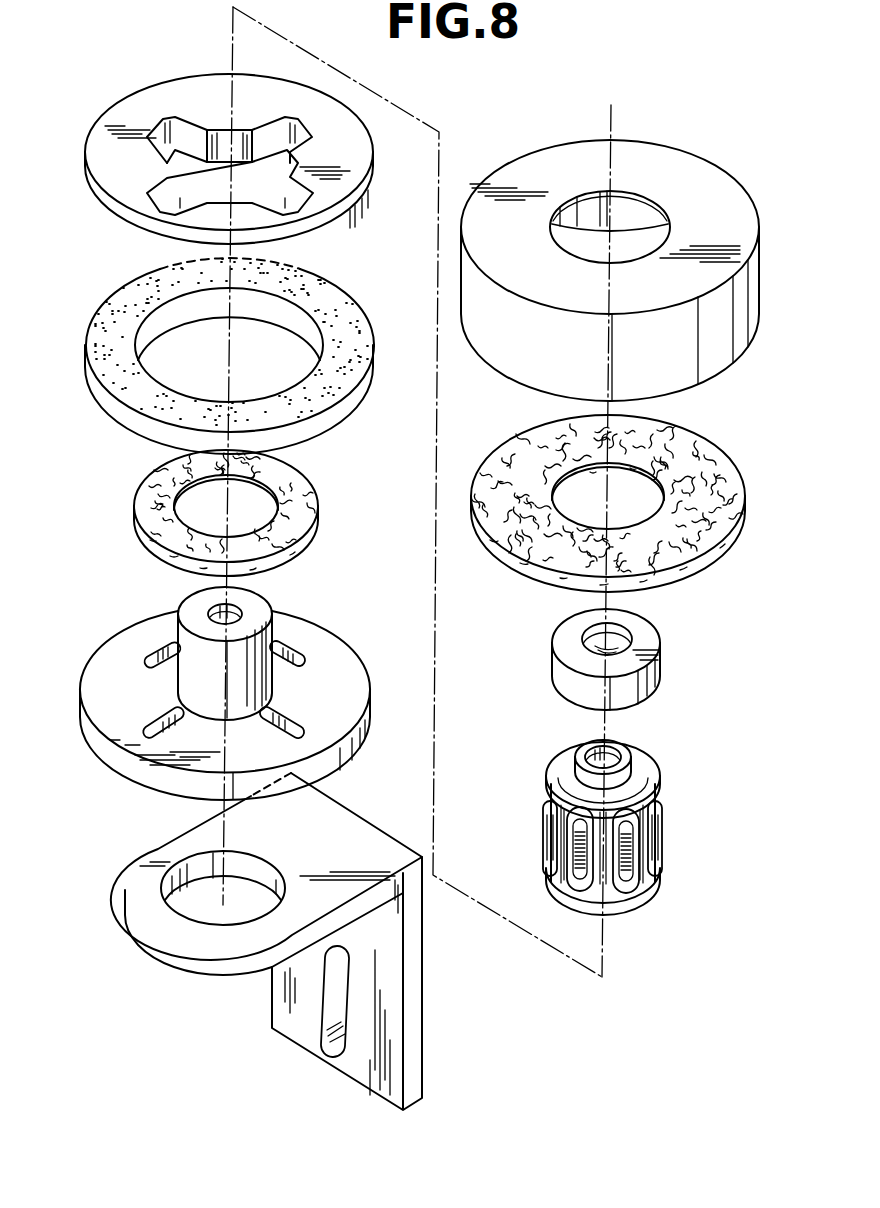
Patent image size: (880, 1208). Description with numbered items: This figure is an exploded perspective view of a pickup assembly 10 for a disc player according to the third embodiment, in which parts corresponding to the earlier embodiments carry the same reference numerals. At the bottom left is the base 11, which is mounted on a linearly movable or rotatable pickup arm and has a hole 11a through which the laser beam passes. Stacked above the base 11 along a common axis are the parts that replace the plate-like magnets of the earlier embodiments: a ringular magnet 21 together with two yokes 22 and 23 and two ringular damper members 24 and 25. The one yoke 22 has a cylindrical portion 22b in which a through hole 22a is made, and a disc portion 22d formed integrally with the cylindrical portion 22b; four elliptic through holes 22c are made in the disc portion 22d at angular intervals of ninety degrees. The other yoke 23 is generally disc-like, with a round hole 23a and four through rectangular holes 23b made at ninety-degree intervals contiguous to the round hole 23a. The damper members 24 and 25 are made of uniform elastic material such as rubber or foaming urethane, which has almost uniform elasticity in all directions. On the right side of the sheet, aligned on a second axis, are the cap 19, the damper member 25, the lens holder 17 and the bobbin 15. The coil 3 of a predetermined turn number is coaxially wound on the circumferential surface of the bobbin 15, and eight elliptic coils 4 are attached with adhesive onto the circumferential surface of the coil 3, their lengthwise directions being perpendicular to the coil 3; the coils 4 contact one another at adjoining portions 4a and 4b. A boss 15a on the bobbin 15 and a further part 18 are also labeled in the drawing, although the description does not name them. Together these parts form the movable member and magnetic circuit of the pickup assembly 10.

The coil 3 is at (623, 897).
The elliptic coils 4 is at (599, 869).
The adjoining portion 4a is at (543, 833).
The adjoining portion 4b is at (653, 830).
The pickup assembly 10 is at (609, 837).
The base 11 is at (266, 941).
The hole 11a is at (257, 873).
The bobbin 15 is at (595, 769).
The hub boss 15a is at (623, 752).
The lens holder 17 is at (623, 628).
The bearing 18 is at (595, 652).
The cap 19 is at (652, 158).
The ringular magnet 21 is at (140, 302).
The yoke 22 is at (225, 704).
The through hole 22a is at (235, 608).
The cylindrical portion 22b is at (242, 697).
The elliptic through holes 22c is at (177, 667).
The disc portion 22d is at (160, 780).
The yoke 23 is at (246, 149).
The round hole 23a is at (220, 137).
The rectangular holes 23b is at (306, 203).
The damper member 24 is at (163, 477).
The damper member 25 is at (657, 432).